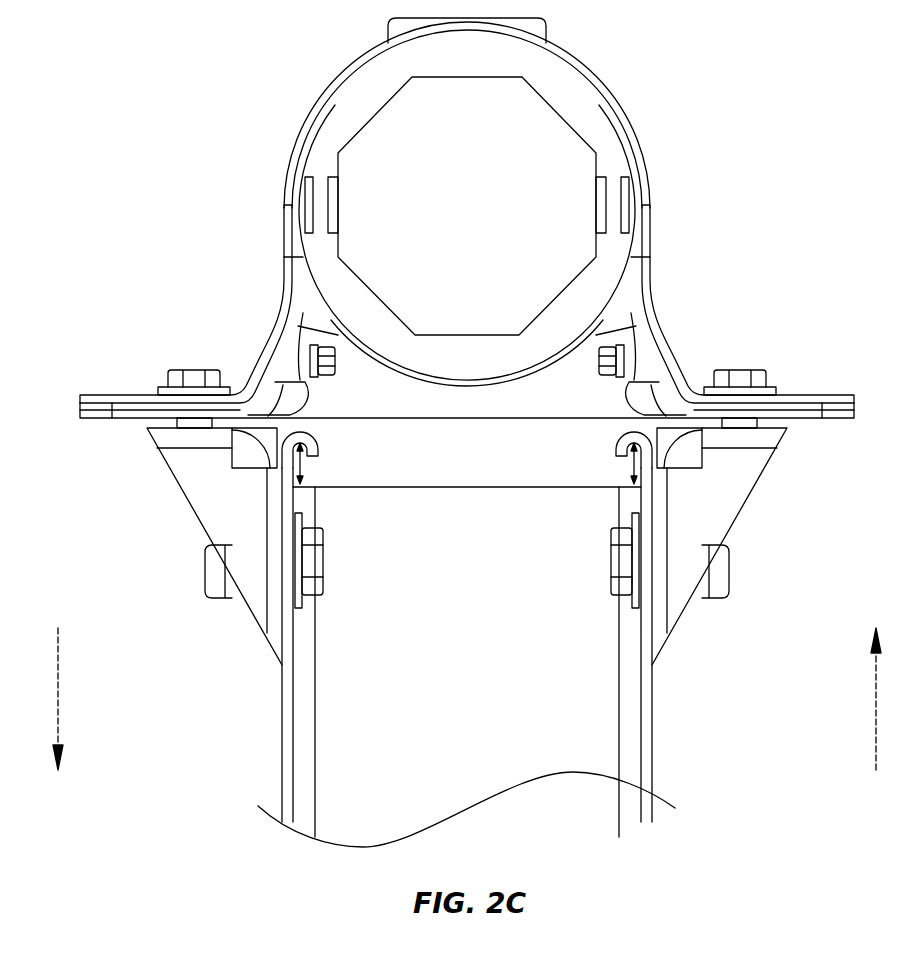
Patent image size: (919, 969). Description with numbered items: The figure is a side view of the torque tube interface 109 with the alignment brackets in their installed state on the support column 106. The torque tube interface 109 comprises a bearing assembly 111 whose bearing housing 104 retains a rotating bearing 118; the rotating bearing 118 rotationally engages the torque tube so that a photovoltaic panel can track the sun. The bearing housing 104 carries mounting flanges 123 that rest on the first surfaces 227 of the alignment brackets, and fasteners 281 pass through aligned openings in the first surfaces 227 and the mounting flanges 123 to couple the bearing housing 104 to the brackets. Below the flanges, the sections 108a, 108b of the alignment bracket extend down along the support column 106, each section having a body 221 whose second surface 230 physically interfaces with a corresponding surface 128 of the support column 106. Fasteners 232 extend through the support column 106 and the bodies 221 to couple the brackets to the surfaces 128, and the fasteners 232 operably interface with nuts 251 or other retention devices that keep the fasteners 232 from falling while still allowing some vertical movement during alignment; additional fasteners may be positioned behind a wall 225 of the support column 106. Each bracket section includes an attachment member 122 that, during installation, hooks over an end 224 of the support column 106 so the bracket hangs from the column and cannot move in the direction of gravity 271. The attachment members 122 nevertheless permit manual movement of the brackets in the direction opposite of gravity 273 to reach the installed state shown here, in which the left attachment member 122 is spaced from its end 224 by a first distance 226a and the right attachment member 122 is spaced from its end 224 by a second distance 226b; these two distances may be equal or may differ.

The bearing housing 104 is at (693, 382).
The support column 106 is at (640, 778).
The section of the alignment bracket 108a is at (178, 455).
The section of the alignment bracket 108b is at (760, 455).
The torque tube interface 109 is at (733, 195).
The bearing assembly 111 is at (632, 127).
The rotating bearing 118 is at (360, 97).
The attachment member 122 is at (318, 452).
The mounting flange 123 is at (92, 396).
The surface of the support column 128 is at (282, 710).
The body 221 is at (222, 534).
The end of the support column 224 is at (290, 493).
The wall of the support column 225 is at (428, 494).
The first distance 226a is at (305, 478).
The second distance 226b is at (630, 478).
The first surface 227 is at (150, 425).
The second surface 230 is at (284, 597).
The fastener 232 is at (290, 585).
The nut 251 is at (300, 553).
The direction of gravity 271 is at (60, 705).
The direction opposite of gravity 273 is at (876, 705).
The fastener 281 is at (214, 372).